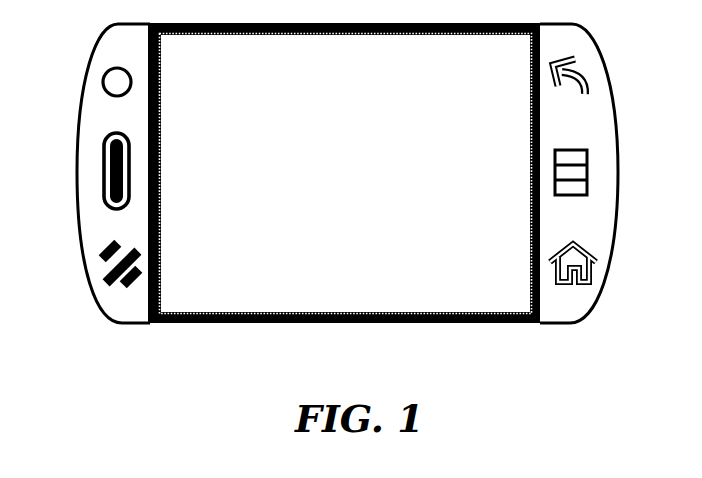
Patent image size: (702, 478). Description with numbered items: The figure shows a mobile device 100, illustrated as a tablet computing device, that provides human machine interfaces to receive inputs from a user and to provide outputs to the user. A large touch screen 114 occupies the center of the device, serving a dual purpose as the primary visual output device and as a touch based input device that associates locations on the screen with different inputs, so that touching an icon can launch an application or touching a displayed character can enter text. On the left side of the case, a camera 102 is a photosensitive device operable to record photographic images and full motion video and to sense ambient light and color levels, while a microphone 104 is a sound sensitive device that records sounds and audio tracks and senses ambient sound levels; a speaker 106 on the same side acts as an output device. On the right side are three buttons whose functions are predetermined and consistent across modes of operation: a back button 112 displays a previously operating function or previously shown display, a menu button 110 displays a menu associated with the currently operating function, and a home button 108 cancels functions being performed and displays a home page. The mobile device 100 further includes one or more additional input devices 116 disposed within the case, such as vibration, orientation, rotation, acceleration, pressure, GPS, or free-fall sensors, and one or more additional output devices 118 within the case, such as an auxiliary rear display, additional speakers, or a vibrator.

The mobile device 100 is at (69, 395).
The camera 102 is at (123, 67).
The microphone 104 is at (114, 132).
The speaker 106 is at (112, 243).
The home button 108 is at (575, 244).
The menu button 110 is at (566, 150).
The back button 112 is at (565, 66).
The touch screen 114 is at (360, 181).
The additional input devices 116 is at (77, 169).
The additional output devices 118 is at (616, 170).